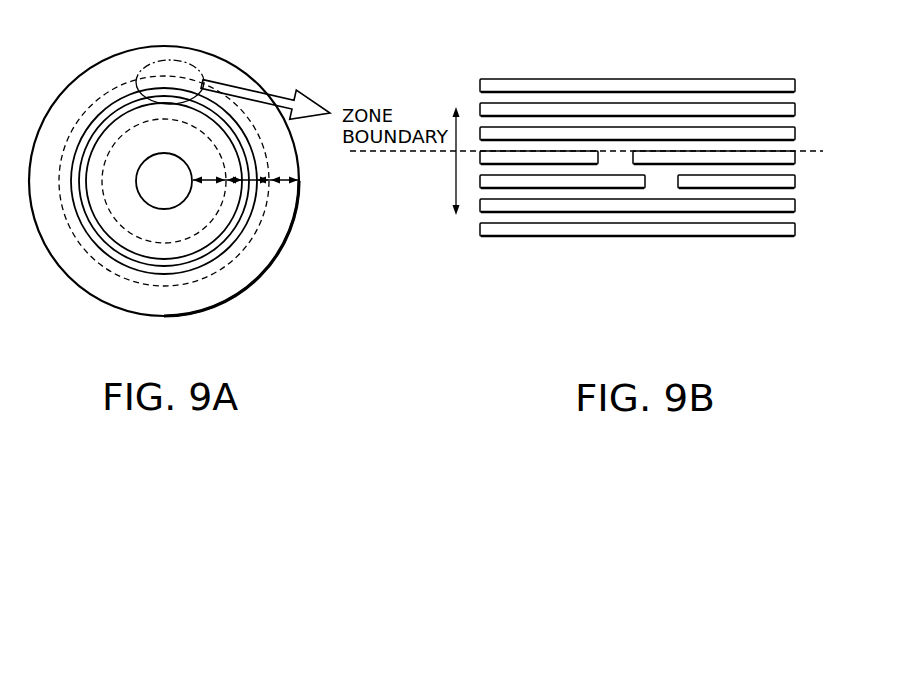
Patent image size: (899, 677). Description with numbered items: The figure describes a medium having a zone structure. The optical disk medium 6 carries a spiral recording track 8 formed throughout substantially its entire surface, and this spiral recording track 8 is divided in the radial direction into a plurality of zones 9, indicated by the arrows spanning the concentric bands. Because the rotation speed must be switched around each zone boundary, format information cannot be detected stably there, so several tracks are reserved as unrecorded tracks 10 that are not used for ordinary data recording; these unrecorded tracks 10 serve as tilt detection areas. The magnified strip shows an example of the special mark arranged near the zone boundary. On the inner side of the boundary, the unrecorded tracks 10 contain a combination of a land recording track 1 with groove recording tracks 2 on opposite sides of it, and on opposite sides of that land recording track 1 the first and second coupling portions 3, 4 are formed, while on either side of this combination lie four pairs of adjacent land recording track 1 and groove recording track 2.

In FIG. 9B, the land recording track 1 is at (542, 217).
In FIG. 9B, the groove recording track 2 is at (577, 228).
In FIG. 9B, the first coupling portion 3 is at (620, 160).
In FIG. 9B, the second coupling portion 4 is at (665, 180).
In FIG. 9A, the optical disk medium 6 is at (227, 63).
In FIG. 9A, the spiral recording track 8 is at (217, 263).
In FIG. 9A, the zone 9 is at (282, 185).
In FIG. 9B, the unrecorded track 10 is at (455, 170).